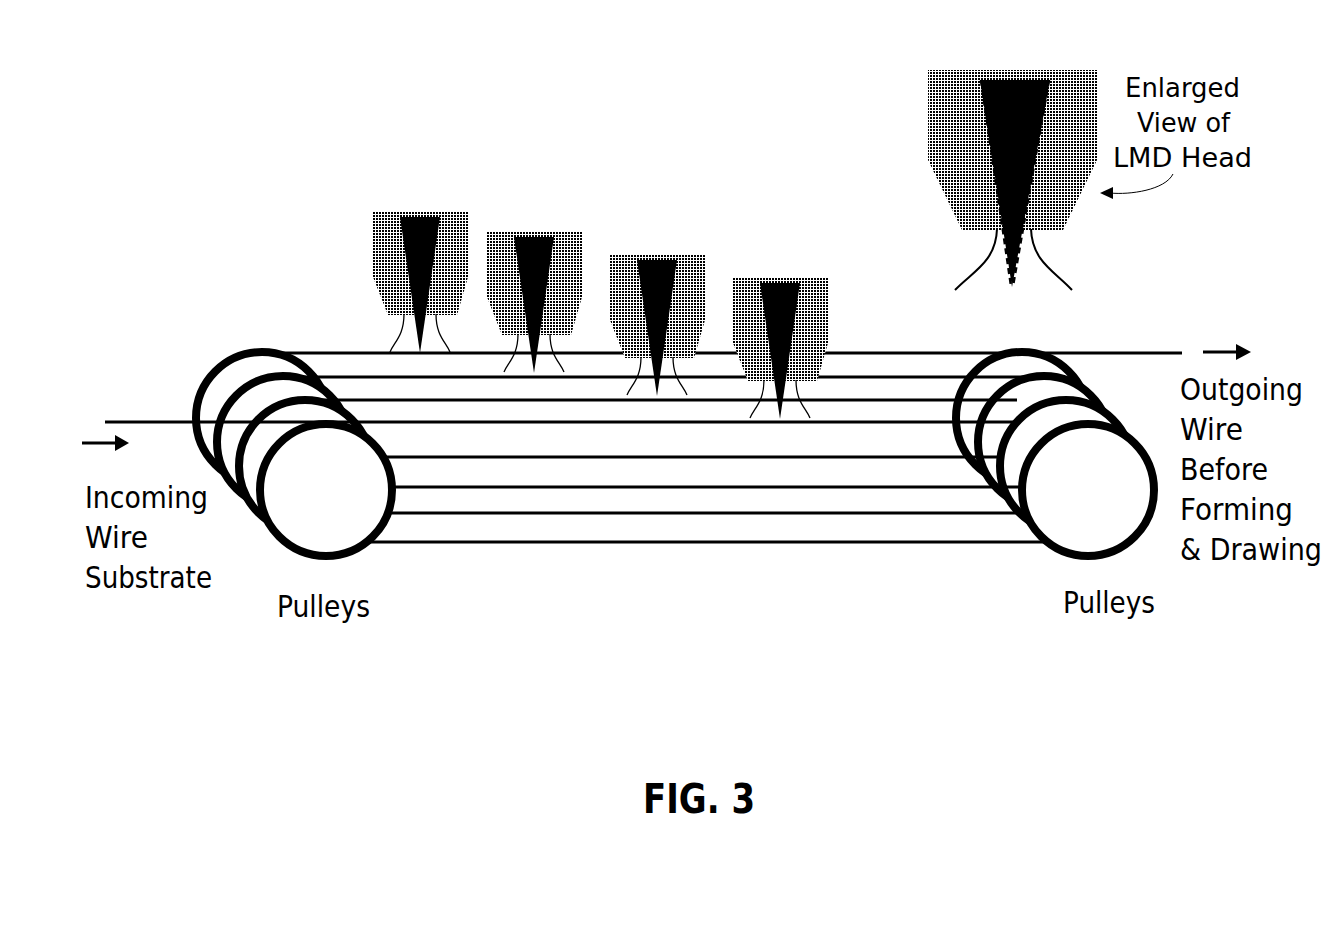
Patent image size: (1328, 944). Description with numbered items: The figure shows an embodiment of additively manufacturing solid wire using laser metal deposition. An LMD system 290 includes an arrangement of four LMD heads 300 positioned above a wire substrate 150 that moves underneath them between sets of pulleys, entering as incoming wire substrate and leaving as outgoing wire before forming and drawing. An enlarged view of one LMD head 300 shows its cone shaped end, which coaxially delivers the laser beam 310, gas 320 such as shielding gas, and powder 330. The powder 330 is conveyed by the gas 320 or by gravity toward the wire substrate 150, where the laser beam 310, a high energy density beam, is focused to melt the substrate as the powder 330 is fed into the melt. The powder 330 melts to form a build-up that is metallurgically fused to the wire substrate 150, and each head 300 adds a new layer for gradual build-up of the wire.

The wire substrate 150 is at (330, 351).
The LMD system 290 is at (505, 92).
The LMD head 300 is at (940, 183).
The laser beam 310 is at (1003, 70).
The gas 320 is at (1052, 70).
The powder 330 is at (975, 72).